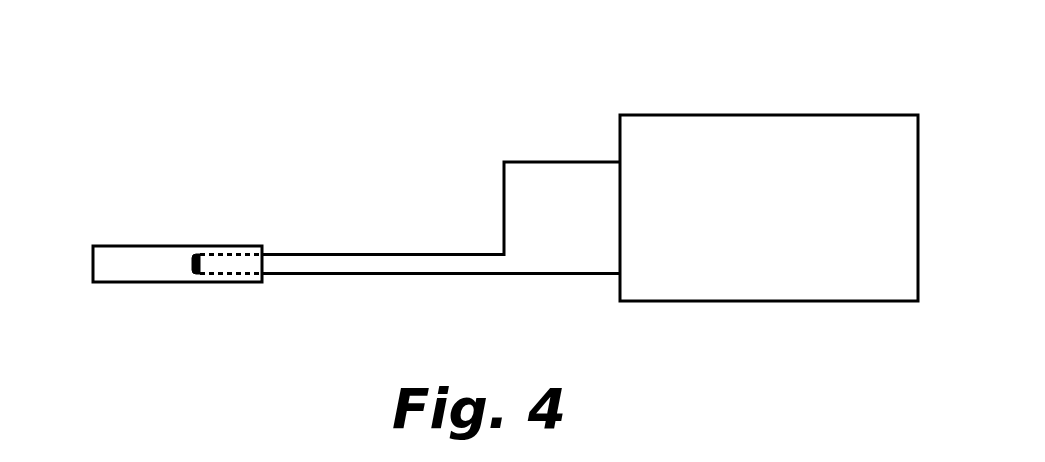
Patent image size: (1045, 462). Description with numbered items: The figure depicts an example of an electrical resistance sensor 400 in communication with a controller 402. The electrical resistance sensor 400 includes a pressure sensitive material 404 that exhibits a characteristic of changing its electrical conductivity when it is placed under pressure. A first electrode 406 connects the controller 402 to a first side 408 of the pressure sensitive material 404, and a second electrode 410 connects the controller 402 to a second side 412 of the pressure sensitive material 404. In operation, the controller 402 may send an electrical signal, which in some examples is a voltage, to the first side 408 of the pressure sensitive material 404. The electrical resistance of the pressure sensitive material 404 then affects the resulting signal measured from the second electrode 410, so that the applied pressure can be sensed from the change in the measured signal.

The electrical resistance sensor 400 is at (106, 90).
The controller 402 is at (585, 80).
The pressure sensitive material 404 is at (193, 262).
The first electrode 406 is at (355, 253).
The first side 408 is at (86, 218).
The second electrode 410 is at (449, 275).
The second side 412 is at (86, 302).